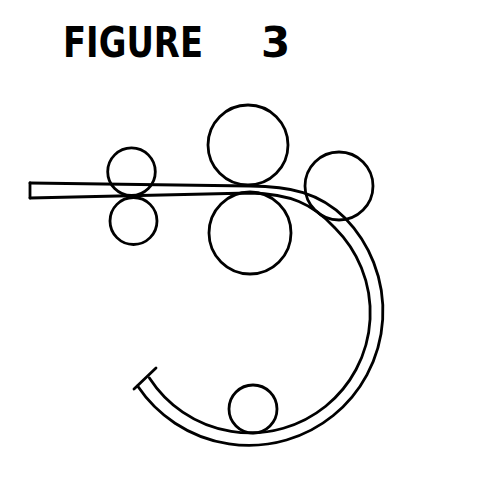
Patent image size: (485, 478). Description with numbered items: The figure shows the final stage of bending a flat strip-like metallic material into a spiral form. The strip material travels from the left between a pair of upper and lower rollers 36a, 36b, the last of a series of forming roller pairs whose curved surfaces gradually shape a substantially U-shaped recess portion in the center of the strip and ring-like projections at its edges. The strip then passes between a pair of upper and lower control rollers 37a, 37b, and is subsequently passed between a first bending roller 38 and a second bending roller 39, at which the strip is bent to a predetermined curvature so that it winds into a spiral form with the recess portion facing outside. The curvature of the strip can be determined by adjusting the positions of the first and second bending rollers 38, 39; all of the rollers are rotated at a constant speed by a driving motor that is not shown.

The upper roller 36a is at (133, 164).
The lower roller 36b is at (120, 224).
The upper control roller 37a is at (268, 145).
The lower control roller 37b is at (229, 233).
The first bending roller 38 is at (355, 190).
The second bending roller 39 is at (255, 402).